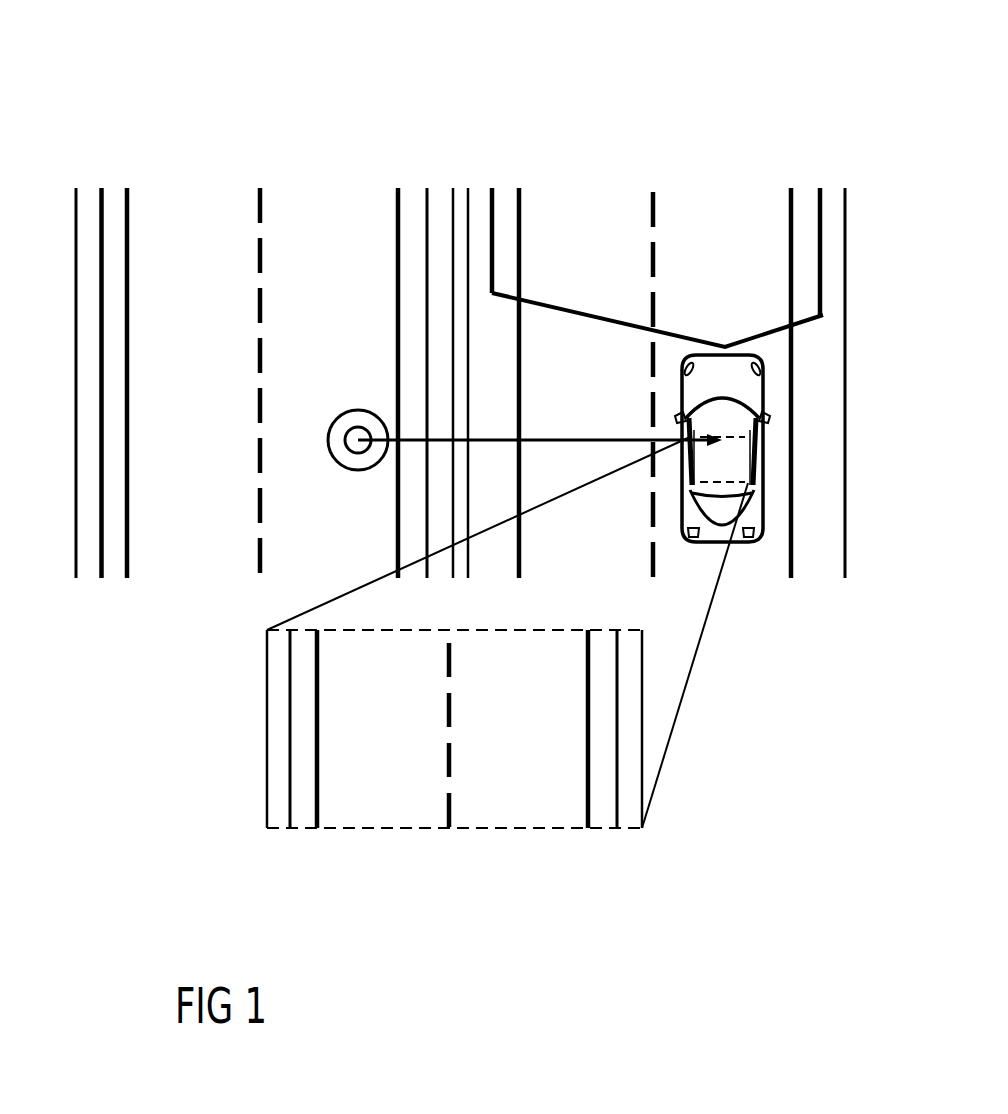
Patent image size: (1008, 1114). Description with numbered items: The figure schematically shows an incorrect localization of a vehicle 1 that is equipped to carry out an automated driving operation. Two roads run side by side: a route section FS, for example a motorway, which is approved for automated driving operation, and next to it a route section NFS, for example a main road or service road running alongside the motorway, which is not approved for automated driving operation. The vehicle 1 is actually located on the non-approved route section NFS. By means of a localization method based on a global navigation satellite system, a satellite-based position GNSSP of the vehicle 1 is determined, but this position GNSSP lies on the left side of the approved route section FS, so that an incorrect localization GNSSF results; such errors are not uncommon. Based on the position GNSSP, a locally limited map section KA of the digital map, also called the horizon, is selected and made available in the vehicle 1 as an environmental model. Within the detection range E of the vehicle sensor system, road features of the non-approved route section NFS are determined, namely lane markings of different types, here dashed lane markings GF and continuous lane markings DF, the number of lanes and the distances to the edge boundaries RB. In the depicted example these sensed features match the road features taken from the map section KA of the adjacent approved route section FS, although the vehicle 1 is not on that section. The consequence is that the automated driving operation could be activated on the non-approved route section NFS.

The edge boundaries RB is at (102, 188).
The continuous lane markings DF is at (127, 188).
The dashed lane markings GF is at (260, 188).
The route section approved for automated driving operation FS is at (220, 137).
The route section not approved for automated driving operation NFS is at (612, 137).
The detection range E is at (735, 233).
The satellite-based position GNSSP is at (358, 438).
The incorrect localization GNSSF is at (565, 443).
The map section KA is at (235, 748).
The vehicle 1 is at (722, 468).